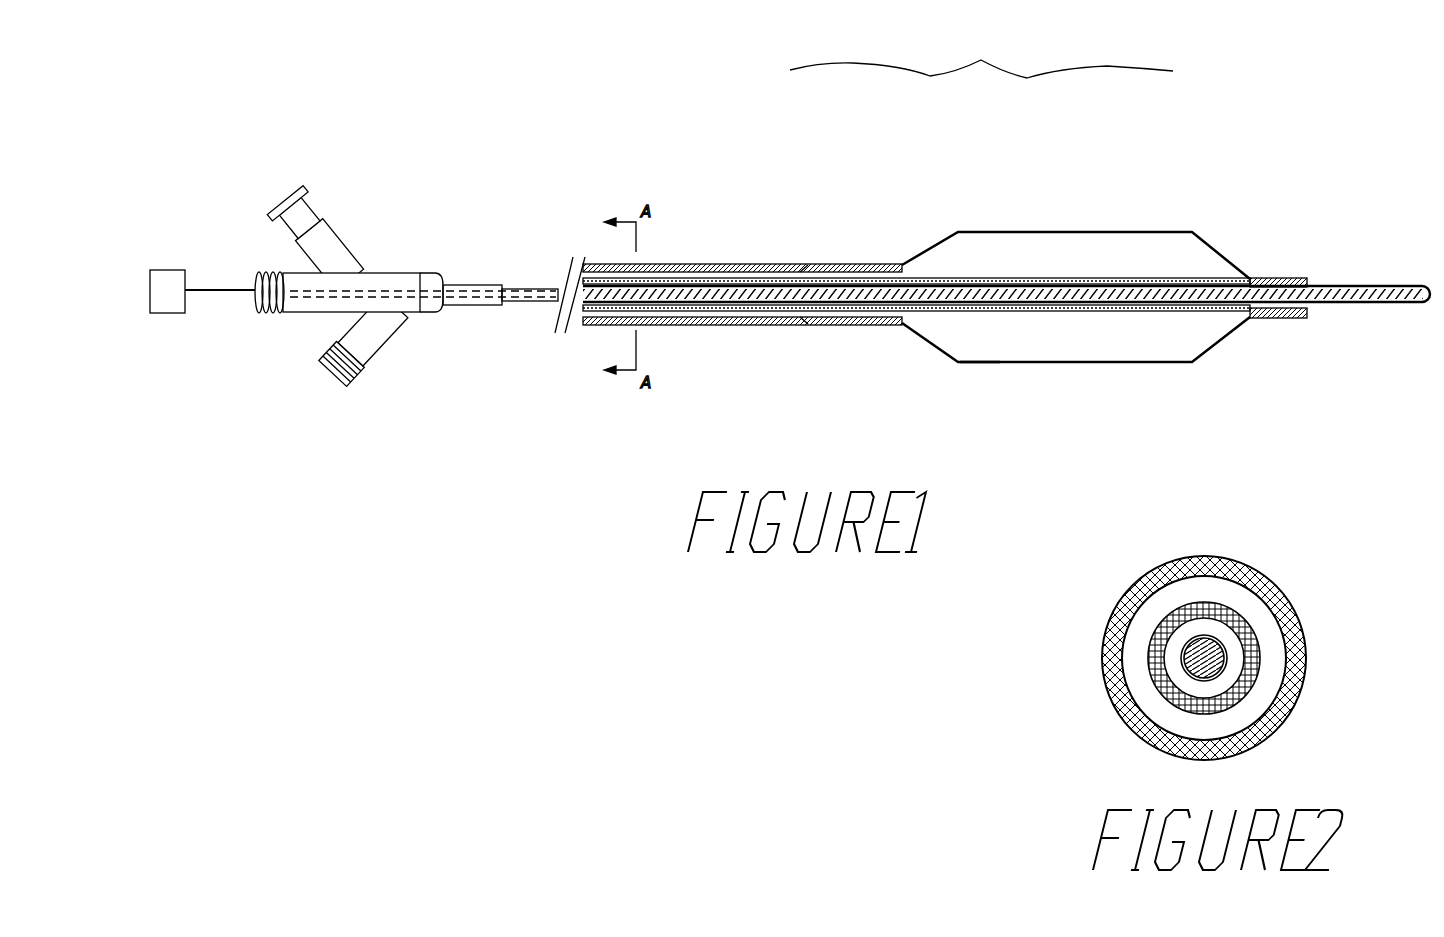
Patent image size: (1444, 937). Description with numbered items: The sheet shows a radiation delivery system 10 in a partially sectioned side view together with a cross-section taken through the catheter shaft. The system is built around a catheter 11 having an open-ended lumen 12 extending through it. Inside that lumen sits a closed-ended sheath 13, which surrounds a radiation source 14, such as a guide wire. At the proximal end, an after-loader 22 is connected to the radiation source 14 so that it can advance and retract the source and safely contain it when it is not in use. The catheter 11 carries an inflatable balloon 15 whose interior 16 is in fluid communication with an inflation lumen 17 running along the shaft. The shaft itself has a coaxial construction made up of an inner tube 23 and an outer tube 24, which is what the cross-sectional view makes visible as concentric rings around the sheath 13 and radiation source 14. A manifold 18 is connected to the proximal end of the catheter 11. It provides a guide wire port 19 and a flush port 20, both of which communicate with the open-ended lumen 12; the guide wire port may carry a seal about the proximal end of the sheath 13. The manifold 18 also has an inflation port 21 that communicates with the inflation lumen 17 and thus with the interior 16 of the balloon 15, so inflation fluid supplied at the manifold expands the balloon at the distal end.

In FIG. 1, the radiation delivery system 10 is at (981, 57).
In FIG. 1, the catheter 11 is at (716, 190).
In FIG. 1, the open-ended lumen 12 is at (1310, 308).
In FIG. 2, the open-ended lumen 12 is at (1204, 632).
In FIG. 1, the closed-ended sheath 13 is at (1367, 308).
In FIG. 2, the closed-ended sheath 13 is at (1185, 640).
In FIG. 1, the radiation source 14 is at (196, 280).
In FIG. 2, the radiation source 14 is at (1185, 668).
In FIG. 1, the inflatable balloon 15 is at (1078, 364).
In FIG. 1, the interior 16 is at (988, 333).
In FIG. 2, the inflation lumen 17 is at (1263, 623).
In FIG. 1, the manifold 18 is at (412, 222).
In FIG. 1, the guide wire port 19 is at (290, 313).
In FIG. 1, the flush port 20 is at (328, 228).
In FIG. 1, the inflation port 21 is at (377, 350).
In FIG. 1, the after-loader 22 is at (173, 317).
In FIG. 2, the inner tube 23 is at (1255, 655).
In FIG. 2, the outer tube 24 is at (1270, 731).